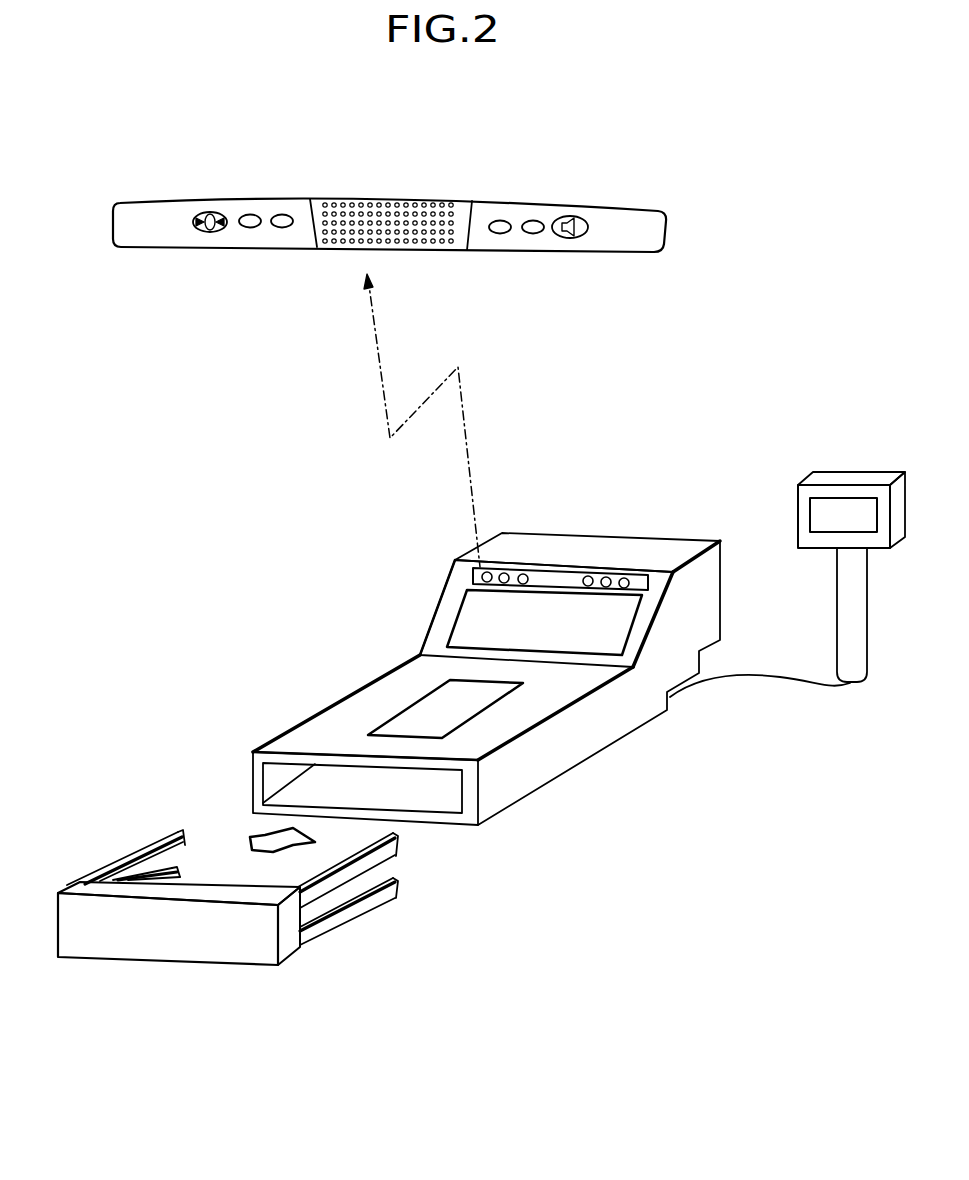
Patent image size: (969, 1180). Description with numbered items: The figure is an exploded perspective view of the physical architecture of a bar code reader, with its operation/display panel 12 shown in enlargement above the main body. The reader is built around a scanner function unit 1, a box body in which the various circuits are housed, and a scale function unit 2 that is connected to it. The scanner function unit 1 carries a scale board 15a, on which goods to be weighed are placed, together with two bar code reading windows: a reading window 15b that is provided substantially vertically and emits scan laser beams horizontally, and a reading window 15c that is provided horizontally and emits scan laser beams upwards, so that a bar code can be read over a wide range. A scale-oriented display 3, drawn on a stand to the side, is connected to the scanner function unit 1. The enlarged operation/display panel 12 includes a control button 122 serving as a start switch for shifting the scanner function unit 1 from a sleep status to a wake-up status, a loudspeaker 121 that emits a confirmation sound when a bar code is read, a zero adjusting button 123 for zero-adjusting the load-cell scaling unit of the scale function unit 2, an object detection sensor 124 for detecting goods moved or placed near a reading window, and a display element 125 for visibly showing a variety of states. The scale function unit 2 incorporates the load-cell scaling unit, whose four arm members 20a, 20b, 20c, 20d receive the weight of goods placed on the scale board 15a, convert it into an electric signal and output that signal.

The scanner function unit 1 is at (582, 748).
The scale function unit 2 is at (203, 987).
The scale-oriented display 3 is at (832, 470).
The operation/display panel 12 is at (592, 252).
The loudspeaker 121 is at (360, 203).
The control button 122 is at (570, 216).
The zero adjusting button 123 is at (210, 212).
The object detection sensor 124 is at (533, 234).
The display element 125 is at (283, 228).
The scale board 15a is at (322, 722).
The bar code reading window 15b is at (452, 612).
The bar code reading window 15c is at (432, 703).
The arm member 20a is at (395, 845).
The arm member 20b is at (367, 910).
The arm member 20c is at (178, 828).
The arm member 20d is at (157, 870).